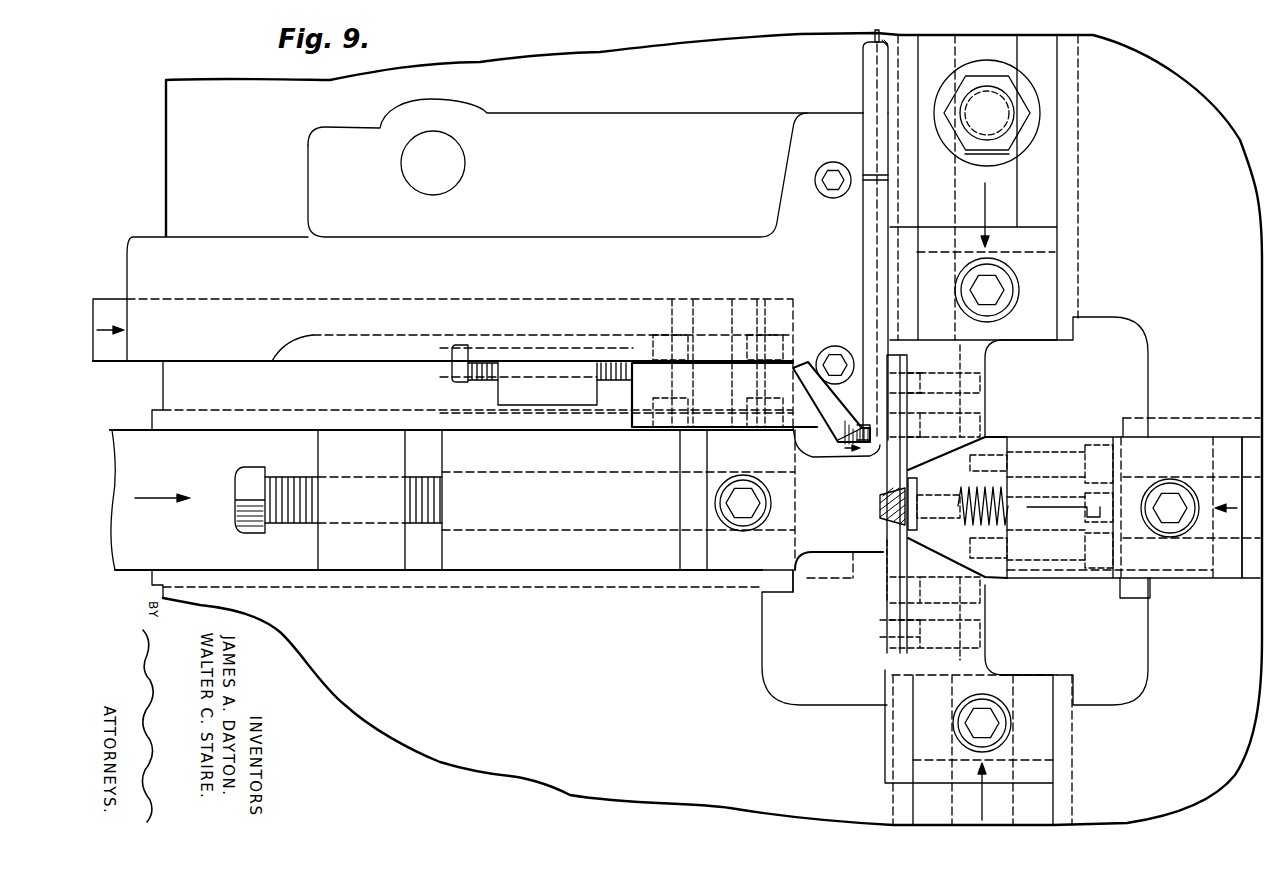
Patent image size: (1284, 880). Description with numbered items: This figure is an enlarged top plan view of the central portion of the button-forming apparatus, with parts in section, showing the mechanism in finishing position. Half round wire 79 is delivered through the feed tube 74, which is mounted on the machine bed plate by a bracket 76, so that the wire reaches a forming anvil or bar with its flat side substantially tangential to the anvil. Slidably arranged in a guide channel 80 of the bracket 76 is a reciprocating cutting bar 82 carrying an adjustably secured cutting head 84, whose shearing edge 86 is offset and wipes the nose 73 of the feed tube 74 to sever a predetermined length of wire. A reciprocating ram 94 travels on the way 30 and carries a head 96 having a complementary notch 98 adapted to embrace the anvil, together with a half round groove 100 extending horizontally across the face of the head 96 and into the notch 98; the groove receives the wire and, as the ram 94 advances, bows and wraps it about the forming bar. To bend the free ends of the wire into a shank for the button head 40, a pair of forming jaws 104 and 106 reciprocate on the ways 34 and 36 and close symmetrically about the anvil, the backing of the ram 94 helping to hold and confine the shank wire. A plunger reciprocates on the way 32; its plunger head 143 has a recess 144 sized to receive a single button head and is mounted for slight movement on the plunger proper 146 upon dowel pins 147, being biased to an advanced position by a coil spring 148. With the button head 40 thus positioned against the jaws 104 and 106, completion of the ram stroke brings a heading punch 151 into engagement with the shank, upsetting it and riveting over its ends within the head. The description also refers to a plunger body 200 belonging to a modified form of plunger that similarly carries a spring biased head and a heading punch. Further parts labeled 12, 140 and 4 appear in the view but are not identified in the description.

The base 12 is at (667, 552).
The way 30 is at (545, 592).
The way 32 is at (1176, 420).
The way 34 is at (1073, 780).
The way 36 is at (1067, 185).
The button head 40 is at (897, 527).
The nose of wire feed tube 73 is at (845, 440).
The feed tube 74 is at (872, 83).
The bracket 76 is at (633, 253).
The half round wire 79 is at (866, 41).
The guide channel 80 is at (520, 298).
The cutting bar 82 is at (515, 388).
The cutting head 84 is at (823, 437).
The shearing edge 86 is at (885, 455).
The ram 94 is at (470, 570).
The head 96 is at (820, 540).
The notch 98 is at (872, 498).
The half round groove 100 is at (877, 553).
The forming jaw 104 is at (980, 668).
The forming jaw 106 is at (978, 352).
The housing 140 is at (1254, 428).
The plunger head 143 is at (997, 447).
The recess 144 is at (918, 487).
The plunger proper 146 is at (1087, 440).
The dowel pins 147 is at (1047, 457).
The coil spring 148 is at (960, 523).
The heading punch 151 is at (1033, 523).
The plunger body 200 is at (1175, 572).
The arm 4 is at (860, 428).